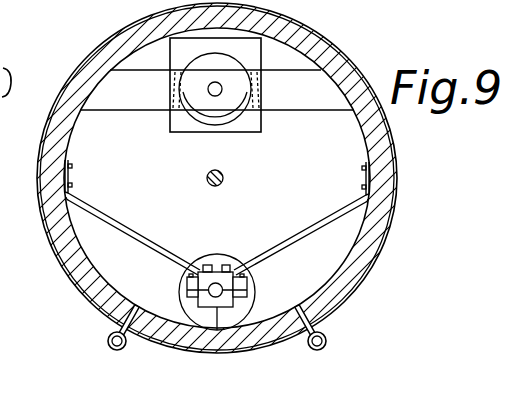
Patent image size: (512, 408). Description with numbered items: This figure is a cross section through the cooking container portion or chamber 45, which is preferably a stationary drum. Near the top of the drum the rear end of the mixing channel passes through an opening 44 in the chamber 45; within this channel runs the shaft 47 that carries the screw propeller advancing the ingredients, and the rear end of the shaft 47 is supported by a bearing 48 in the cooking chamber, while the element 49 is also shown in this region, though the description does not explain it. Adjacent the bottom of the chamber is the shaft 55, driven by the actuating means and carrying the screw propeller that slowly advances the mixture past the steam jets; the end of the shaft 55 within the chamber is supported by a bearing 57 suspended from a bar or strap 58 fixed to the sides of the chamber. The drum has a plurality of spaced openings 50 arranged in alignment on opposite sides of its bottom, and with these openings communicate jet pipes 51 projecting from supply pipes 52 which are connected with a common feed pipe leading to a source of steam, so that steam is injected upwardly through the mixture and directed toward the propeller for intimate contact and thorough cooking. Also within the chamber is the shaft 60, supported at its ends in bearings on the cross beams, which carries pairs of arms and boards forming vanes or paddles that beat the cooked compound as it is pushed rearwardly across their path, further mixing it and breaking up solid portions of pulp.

The opening 44 is at (259, 50).
The cooking container portion or chamber 45 is at (53, 140).
The shaft 47 is at (219, 88).
The bearing 48 is at (301, 97).
The wheel 49 is at (202, 55).
The spaced openings 50 is at (134, 313).
The jet pipes 51 is at (322, 328).
The supply pipes 52 is at (108, 340).
The shaft 55 is at (217, 283).
The bearing 57 is at (240, 277).
The bar or strap 58 is at (132, 227).
The shaft 60 is at (226, 173).